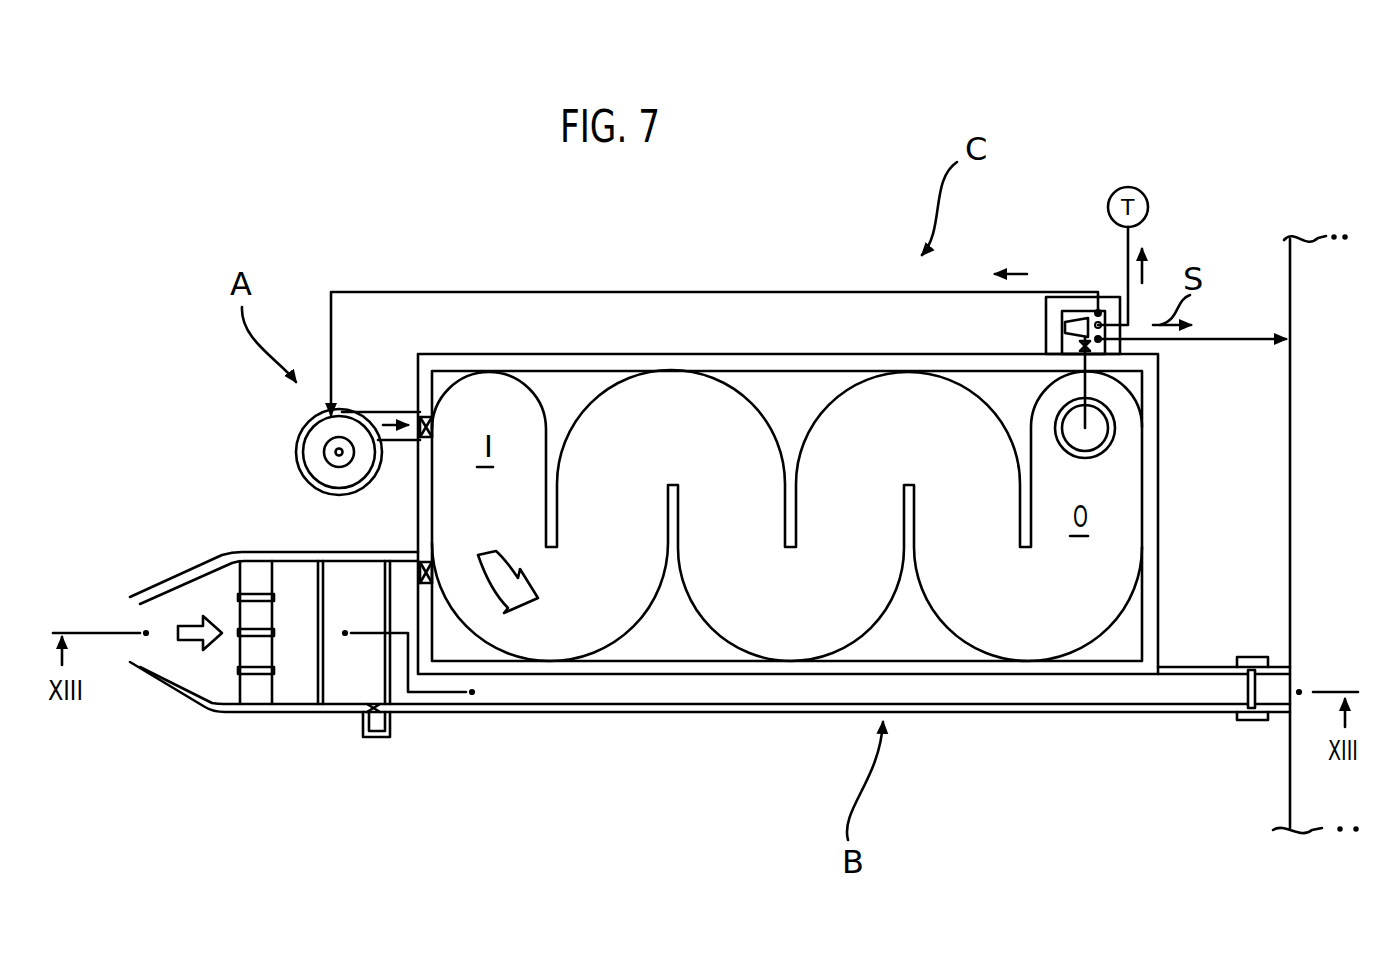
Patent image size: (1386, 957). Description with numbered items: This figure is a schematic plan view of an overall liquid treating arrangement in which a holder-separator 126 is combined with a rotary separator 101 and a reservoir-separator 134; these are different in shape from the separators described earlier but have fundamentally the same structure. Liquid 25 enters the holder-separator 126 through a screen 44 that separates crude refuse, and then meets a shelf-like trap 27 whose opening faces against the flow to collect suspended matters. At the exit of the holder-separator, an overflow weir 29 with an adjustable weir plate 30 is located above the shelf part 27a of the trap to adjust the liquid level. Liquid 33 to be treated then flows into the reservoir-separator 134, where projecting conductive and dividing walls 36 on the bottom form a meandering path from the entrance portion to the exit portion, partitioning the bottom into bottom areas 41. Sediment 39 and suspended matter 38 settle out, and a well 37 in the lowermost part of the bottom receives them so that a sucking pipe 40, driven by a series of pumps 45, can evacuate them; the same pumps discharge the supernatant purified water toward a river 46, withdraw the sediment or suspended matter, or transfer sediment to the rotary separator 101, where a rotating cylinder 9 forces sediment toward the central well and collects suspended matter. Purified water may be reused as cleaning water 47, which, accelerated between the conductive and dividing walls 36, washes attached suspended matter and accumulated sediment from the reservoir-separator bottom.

The rotating cylinder 9 is at (330, 462).
The rotary separator 101 is at (303, 424).
The cleaning water 47 is at (390, 418).
The liquid 25 is at (191, 620).
The screen 44 is at (238, 697).
The shelf part 27a is at (317, 647).
The shelf-like trap 27 is at (348, 672).
The liquid 33 is at (497, 553).
The conductive and dividing walls 36 is at (665, 505).
The bottom areas 41 is at (717, 462).
The reservoir-separator 134 is at (792, 353).
The sucking pipe 40 is at (1100, 382).
The well 37 is at (1095, 428).
The series of pumps 45 is at (1062, 338).
The river 46 is at (1370, 433).
The holder-separator 126 is at (652, 713).
The overflow weir 29 is at (1216, 735).
The adjustable weir plate 30 is at (1243, 685).
The sediment 39 is at (1025, 274).
The suspended matter 38 is at (1145, 270).